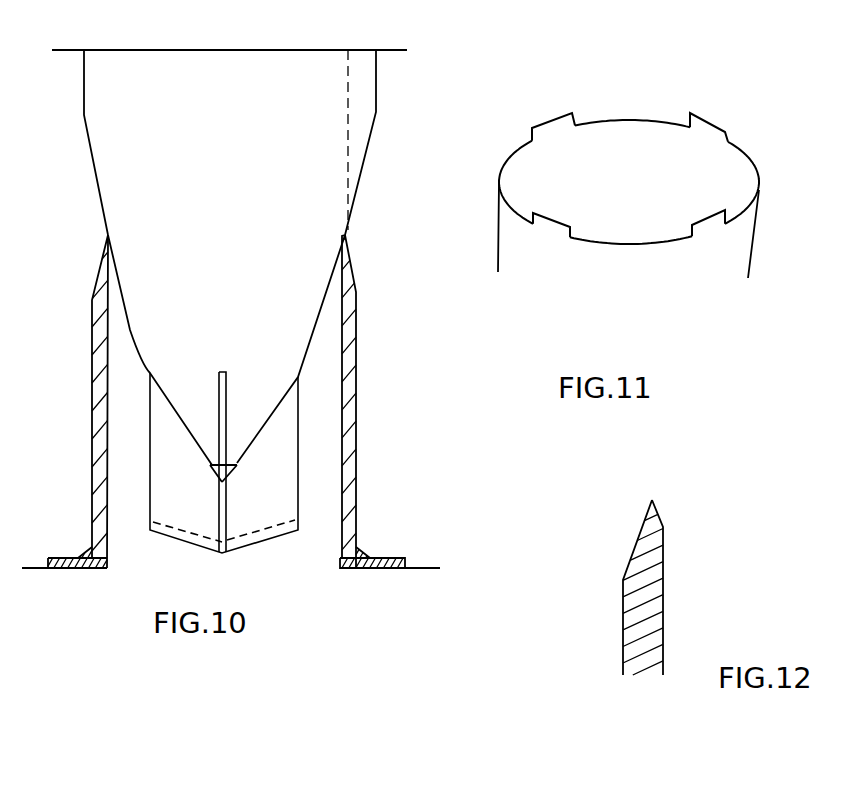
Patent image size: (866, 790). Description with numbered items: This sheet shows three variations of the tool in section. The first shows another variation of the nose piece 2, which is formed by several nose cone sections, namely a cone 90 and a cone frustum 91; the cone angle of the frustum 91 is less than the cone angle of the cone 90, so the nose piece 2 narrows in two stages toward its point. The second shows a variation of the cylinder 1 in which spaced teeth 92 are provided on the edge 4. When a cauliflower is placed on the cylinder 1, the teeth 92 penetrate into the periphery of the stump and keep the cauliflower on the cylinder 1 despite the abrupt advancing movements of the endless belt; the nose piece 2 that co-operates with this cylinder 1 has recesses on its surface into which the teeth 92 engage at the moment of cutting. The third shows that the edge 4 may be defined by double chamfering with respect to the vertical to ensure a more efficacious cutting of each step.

In FIG. 11, the cylinder 1 is at (617, 183).
In FIG. 10, the nose piece 2 is at (307, 343).
In FIG. 11, the edge 4 is at (626, 247).
In FIG. 12, the edge 4 is at (658, 573).
In FIG. 10, the cone 90 is at (267, 418).
In FIG. 10, the cone frustum 91 is at (362, 165).
In FIG. 11, the teeth 92 is at (550, 126).